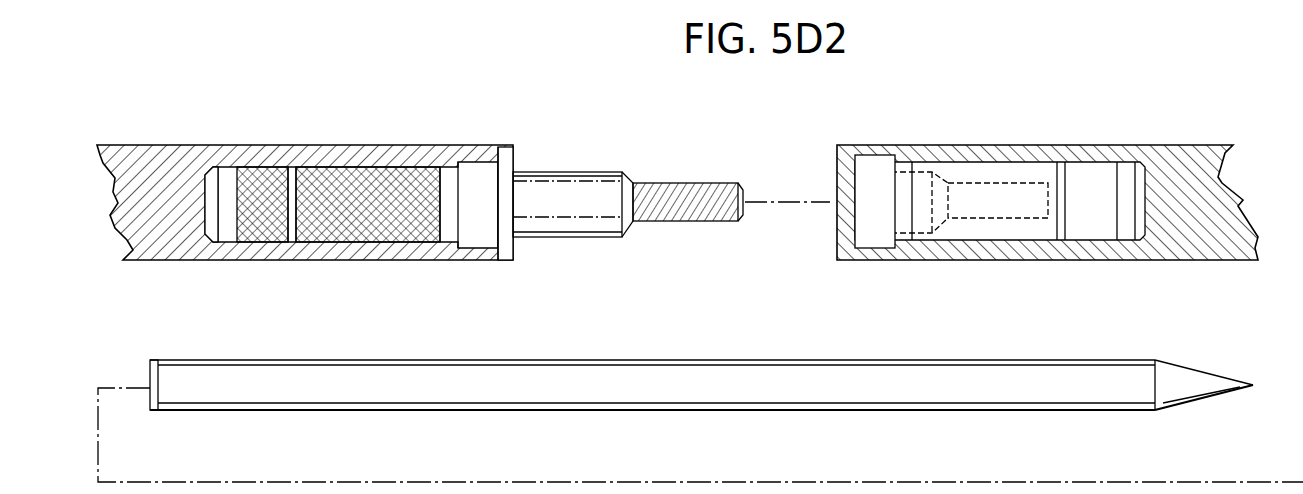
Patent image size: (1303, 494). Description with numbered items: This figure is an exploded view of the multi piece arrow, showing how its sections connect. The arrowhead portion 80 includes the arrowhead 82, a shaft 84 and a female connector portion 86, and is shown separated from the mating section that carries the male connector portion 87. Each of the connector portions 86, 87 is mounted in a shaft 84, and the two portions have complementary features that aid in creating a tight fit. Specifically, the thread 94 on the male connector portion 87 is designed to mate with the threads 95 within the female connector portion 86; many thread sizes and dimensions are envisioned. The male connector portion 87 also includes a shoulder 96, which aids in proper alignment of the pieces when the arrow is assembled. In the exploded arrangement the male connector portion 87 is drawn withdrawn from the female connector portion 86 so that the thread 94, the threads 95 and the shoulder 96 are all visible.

The arrowhead portion 80 is at (742, 338).
The arrowhead 82 is at (1193, 382).
The shaft 84 is at (572, 383).
The female connector portion 86 is at (1083, 180).
The male connector portion 87 is at (382, 197).
The thread 94 is at (697, 222).
The threads 95 is at (1008, 192).
The shoulder 96 is at (572, 203).